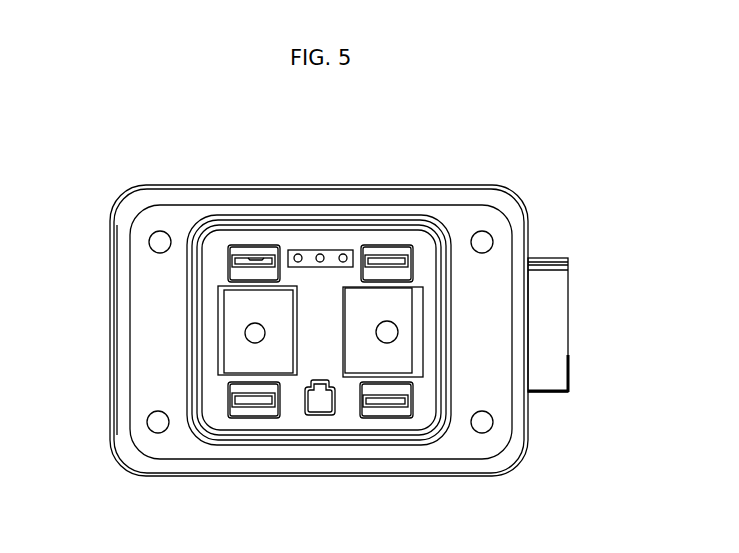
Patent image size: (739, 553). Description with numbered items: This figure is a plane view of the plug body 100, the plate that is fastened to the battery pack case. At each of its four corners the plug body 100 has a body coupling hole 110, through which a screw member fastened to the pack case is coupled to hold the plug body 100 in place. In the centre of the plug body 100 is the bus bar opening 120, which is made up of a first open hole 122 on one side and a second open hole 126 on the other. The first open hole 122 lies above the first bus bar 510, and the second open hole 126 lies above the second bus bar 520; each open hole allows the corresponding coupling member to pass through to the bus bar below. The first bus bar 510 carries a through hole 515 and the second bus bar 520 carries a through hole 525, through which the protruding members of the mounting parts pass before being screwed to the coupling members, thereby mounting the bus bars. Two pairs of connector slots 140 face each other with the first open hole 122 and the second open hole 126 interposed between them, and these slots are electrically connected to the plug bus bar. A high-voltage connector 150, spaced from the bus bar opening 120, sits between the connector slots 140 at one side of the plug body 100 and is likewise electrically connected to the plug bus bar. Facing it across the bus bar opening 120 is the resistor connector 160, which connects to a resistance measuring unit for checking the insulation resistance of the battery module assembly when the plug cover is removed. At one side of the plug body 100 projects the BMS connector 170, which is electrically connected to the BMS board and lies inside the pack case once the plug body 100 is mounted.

The plug body 100 is at (112, 154).
The body coupling hole 110 is at (482, 434).
The bus bar opening 120 is at (326, 317).
The first open hole 122 is at (217, 325).
The second open hole 126 is at (422, 310).
The connector slot 140 is at (243, 253).
The high-voltage connector 150 is at (320, 414).
The resistor connector 160 is at (312, 250).
The BMS connector 170 is at (549, 285).
The first bus bar 510 is at (255, 362).
The through hole 515 is at (252, 343).
The second bus bar 520 is at (390, 363).
The through hole 525 is at (378, 343).